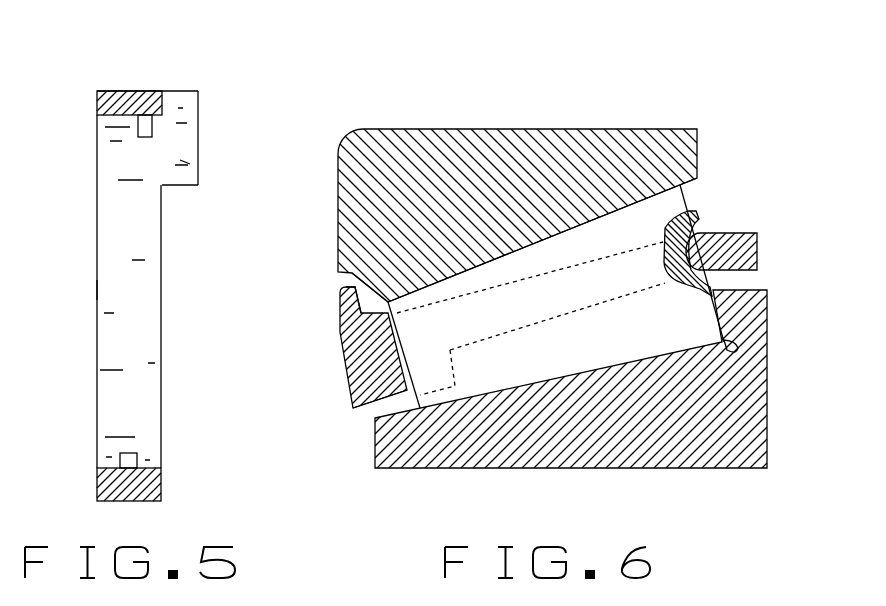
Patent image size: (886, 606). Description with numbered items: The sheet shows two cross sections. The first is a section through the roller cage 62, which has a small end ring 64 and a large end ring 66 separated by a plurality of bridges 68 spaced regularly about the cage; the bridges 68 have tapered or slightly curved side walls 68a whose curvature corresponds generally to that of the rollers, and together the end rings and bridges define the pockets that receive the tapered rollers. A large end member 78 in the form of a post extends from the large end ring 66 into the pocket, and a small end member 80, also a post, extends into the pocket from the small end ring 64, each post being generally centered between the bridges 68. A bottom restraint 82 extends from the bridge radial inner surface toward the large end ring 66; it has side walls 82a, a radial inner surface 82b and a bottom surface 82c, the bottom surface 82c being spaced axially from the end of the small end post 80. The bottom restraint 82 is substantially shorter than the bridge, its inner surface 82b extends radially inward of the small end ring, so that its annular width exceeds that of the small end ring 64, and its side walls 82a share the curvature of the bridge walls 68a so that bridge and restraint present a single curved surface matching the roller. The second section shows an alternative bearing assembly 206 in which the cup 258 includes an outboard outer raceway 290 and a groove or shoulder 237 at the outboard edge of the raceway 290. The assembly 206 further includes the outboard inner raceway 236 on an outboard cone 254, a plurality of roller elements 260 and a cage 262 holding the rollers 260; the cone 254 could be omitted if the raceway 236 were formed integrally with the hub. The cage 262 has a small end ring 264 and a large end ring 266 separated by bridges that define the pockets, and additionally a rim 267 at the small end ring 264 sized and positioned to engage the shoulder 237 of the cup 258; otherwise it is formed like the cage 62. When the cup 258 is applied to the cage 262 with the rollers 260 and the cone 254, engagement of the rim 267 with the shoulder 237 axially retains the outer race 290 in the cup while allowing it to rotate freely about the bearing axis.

In FIG. 5, the cage 62 is at (134, 74).
In FIG. 5, the small end ring 64 is at (153, 91).
In FIG. 5, the large end ring 66 is at (138, 501).
In FIG. 5, the bridges 68 is at (111, 231).
In FIG. 5, the bridge side walls 68a is at (109, 281).
In FIG. 5, the large end members 78 is at (120, 454).
In FIG. 5, the small end members 80 is at (152, 130).
In FIG. 5, the bottom restraint 82 is at (190, 188).
In FIG. 5, the bottom restraint side walls 82a is at (184, 155).
In FIG. 5, the bottom restraint radial inner surface 82b is at (198, 107).
In FIG. 5, the bottom restraint bottom surface 82c is at (178, 188).
In FIG. 6, the bearing assembly 206 is at (745, 186).
In FIG. 6, the outboard inner raceway 236 is at (613, 363).
In FIG. 6, the groove or shoulder 237 is at (371, 283).
In FIG. 6, the outboard cone 254 is at (690, 453).
In FIG. 6, the cup 258 is at (433, 127).
In FIG. 6, the roller elements 260 is at (690, 209).
In FIG. 6, the cage 262 is at (349, 402).
In FIG. 6, the small end ring 264 is at (340, 370).
In FIG. 6, the large end ring 266 is at (759, 252).
In FIG. 6, the rim 267 is at (342, 330).
In FIG. 6, the outboard outer raceway 290 is at (623, 222).